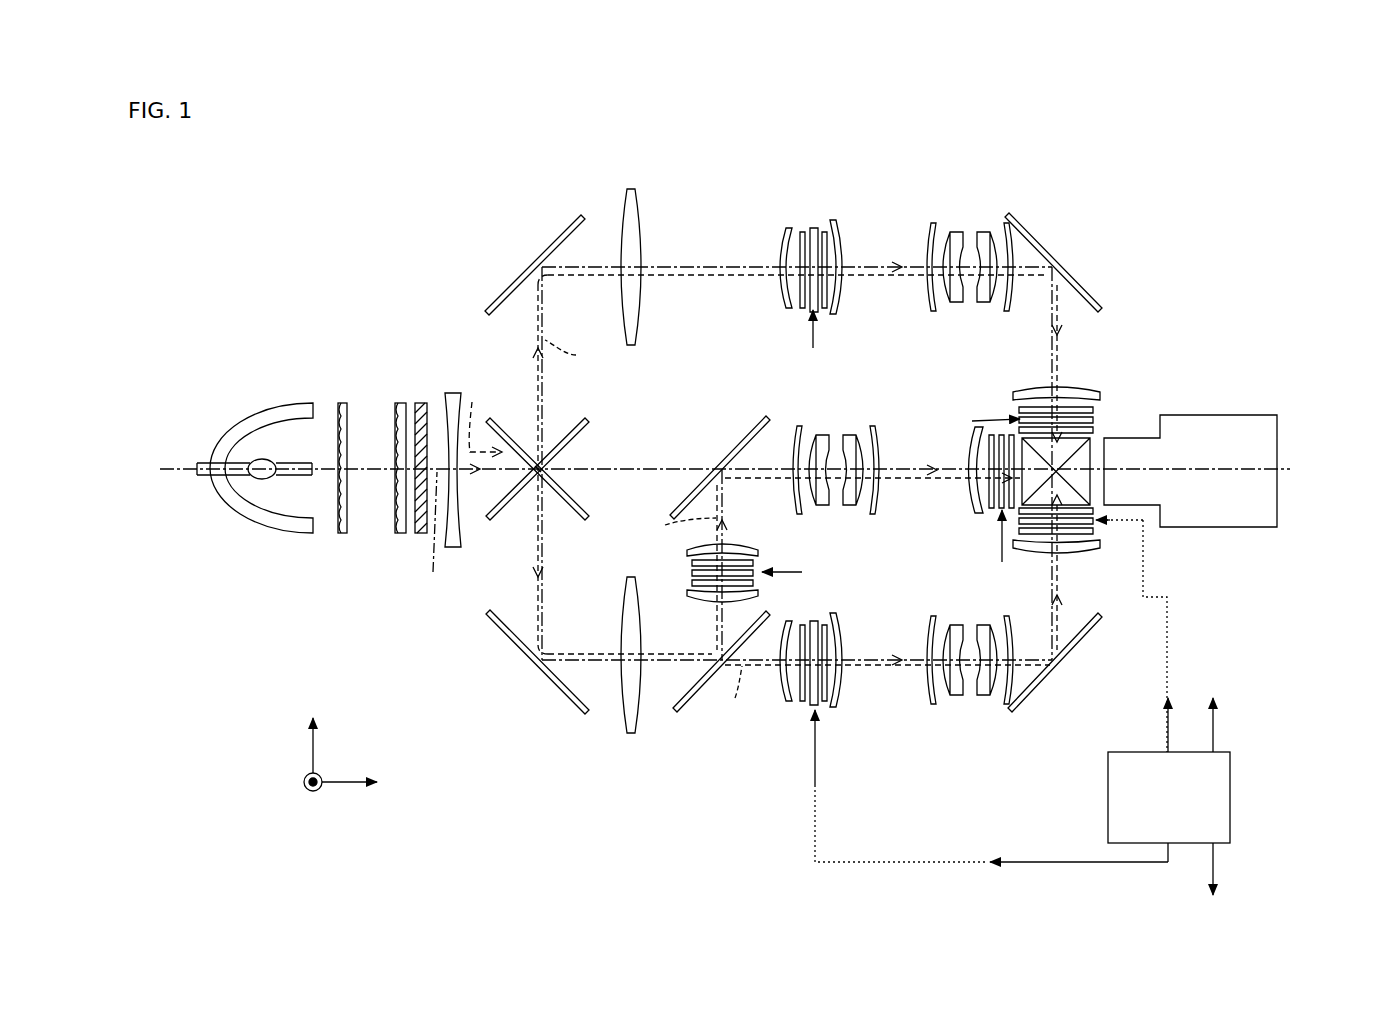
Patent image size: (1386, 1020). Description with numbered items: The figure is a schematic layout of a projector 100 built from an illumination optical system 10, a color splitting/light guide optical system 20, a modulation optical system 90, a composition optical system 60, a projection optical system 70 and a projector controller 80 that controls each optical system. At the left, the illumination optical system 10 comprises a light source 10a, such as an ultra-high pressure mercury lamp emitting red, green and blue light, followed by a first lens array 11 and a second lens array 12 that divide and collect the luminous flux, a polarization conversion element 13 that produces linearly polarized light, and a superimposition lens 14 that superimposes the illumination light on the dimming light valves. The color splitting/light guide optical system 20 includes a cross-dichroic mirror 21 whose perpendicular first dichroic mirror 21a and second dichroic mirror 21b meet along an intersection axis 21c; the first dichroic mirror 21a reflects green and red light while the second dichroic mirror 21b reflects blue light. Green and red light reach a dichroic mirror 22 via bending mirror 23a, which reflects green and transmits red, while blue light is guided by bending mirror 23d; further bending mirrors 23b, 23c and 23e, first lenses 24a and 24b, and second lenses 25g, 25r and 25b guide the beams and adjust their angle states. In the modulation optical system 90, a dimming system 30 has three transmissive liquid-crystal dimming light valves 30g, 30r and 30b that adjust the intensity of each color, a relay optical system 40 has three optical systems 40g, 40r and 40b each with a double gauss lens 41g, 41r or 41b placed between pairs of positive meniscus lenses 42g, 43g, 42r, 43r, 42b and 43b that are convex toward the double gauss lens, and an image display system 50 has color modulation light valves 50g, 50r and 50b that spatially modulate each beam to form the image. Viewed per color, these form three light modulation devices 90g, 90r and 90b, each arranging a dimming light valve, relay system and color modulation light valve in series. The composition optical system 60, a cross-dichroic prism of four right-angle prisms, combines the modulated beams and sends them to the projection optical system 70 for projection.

The projector 100 is at (1090, 112).
The illumination optical system 10 is at (345, 370).
The light source 10a is at (270, 538).
The first lens array 11 is at (344, 537).
The second lens array 12 is at (401, 537).
The polarization conversion element 13 is at (420, 401).
The superimposition lens 14 is at (455, 394).
The color splitting/light guide optical system 20 is at (532, 190).
The cross-dichroic mirror 21 is at (590, 414).
The first dichroic mirror 21a is at (575, 502).
The second dichroic mirror 21b is at (572, 435).
The intersection axis 21c is at (545, 470).
The dichroic mirror 22 is at (688, 700).
The bending mirror 23a is at (512, 645).
The bending mirror 23b is at (710, 470).
The bending mirror 23c is at (1066, 660).
The bending mirror 23d is at (526, 276).
The bending mirror 23e is at (1072, 268).
The first lens 24a is at (632, 697).
The first lens 24b is at (626, 222).
The second lens 25b is at (784, 243).
The second lens 25g is at (698, 596).
The second lens 25r is at (790, 700).
The dimming system 30 is at (778, 210).
The dimming light valve 30b is at (812, 222).
The dimming light valve 30g is at (675, 573).
The dimming light valve 30r is at (800, 712).
The relay optical system 40 is at (908, 178).
The optical system 40b is at (882, 212).
The optical system 40g is at (795, 418).
The optical system 40r is at (900, 740).
The double gauss lens 41b is at (968, 225).
The double gauss lens 41g is at (835, 422).
The double gauss lens 41r is at (968, 712).
The meniscus lens 42b is at (836, 240).
The meniscus lens 42g is at (742, 548).
The meniscus lens 42r is at (836, 697).
The meniscus lens 43b is at (1075, 392).
The meniscus lens 43g is at (975, 448).
The meniscus lens 43r is at (1036, 550).
The image display system 50 is at (978, 393).
The color modulation light valve 50b is at (1013, 408).
The color modulation light valve 50g is at (993, 512).
The color modulation light valve 50r is at (1097, 532).
The composition optical system 60 is at (1082, 450).
The projection optical system 70 is at (1212, 428).
The projector controller 80 is at (1112, 780).
The modulation optical system 90 is at (790, 130).
The light modulation device 90b is at (723, 158).
The light modulation device 90g is at (795, 535).
The light modulation device 90r is at (862, 760).